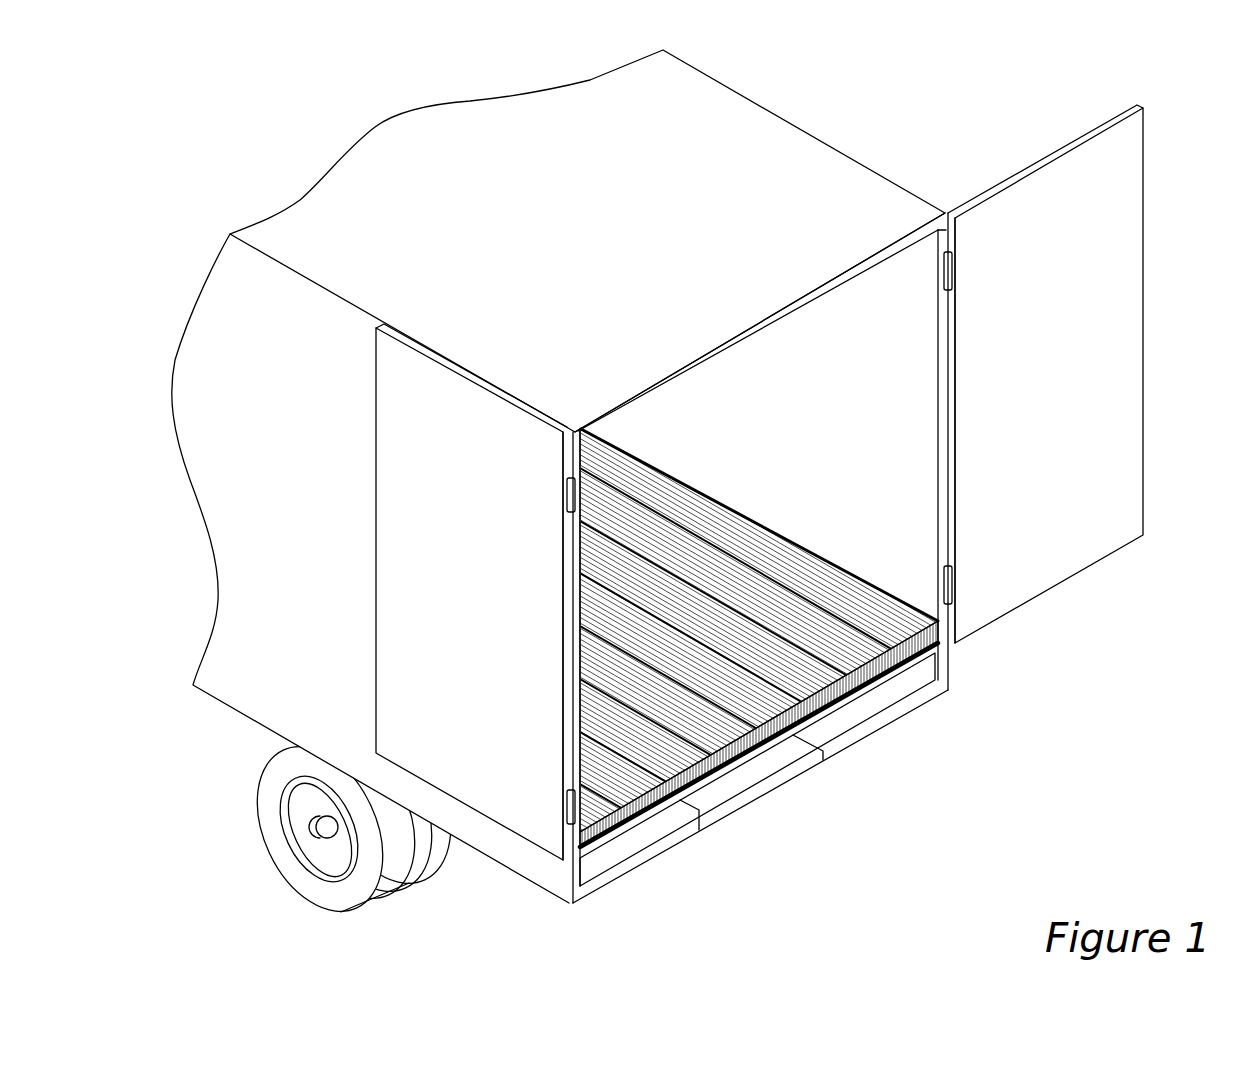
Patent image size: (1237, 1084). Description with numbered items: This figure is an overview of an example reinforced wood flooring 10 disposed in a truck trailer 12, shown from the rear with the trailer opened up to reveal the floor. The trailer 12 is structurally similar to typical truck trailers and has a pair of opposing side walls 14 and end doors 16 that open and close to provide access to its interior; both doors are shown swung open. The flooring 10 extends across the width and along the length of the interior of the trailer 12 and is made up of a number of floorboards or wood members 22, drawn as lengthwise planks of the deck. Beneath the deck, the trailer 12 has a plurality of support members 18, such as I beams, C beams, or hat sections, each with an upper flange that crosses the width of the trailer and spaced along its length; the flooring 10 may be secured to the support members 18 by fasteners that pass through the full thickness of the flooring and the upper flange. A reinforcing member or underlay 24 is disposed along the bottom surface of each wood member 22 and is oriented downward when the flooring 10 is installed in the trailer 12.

The reinforced wood flooring 10 is at (756, 500).
The truck trailer 12 is at (847, 132).
The side walls 14 is at (278, 394).
The end doors 16 is at (395, 559).
The support members 18 is at (737, 766).
The wood members 22 is at (818, 578).
The underlay 24 is at (825, 714).